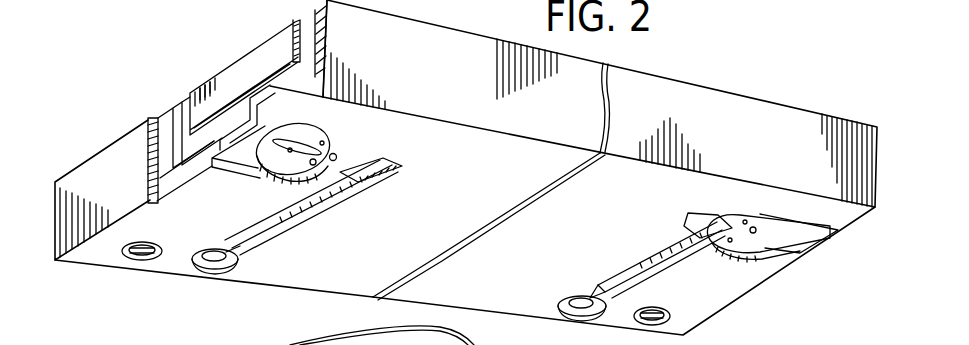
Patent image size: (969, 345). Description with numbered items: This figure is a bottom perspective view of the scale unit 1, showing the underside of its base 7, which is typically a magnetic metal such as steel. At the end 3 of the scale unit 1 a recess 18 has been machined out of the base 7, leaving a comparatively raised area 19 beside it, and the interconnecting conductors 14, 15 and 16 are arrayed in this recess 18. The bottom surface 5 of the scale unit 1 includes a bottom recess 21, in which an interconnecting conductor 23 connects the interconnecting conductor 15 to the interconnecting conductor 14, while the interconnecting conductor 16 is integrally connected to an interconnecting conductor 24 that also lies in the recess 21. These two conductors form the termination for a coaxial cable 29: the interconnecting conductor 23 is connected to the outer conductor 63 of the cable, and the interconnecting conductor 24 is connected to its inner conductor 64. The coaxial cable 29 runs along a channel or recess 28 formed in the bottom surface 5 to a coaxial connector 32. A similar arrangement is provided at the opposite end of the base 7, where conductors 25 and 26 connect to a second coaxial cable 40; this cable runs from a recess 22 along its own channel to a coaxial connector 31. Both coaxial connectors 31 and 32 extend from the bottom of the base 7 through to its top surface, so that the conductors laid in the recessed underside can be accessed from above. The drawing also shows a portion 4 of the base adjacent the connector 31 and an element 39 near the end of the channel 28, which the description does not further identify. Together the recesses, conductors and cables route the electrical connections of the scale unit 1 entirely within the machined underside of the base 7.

The scale unit 1 is at (727, 84).
The end 3 is at (85, 172).
The floor portion 4 is at (727, 307).
The bottom surface 5 is at (308, 278).
The base 7 is at (879, 128).
The interconnecting conductor 14 is at (160, 120).
The interconnecting conductor 15 is at (318, 47).
The interconnecting conductor 16 is at (180, 110).
The recess 18 is at (173, 188).
The raised area 19 is at (268, 48).
The bottom recess 21 is at (227, 167).
The recess 22 is at (757, 257).
The interconnecting conductor 23 is at (290, 134).
The interconnecting conductor 24 is at (262, 142).
The conductor 25 is at (785, 253).
The conductor 26 is at (798, 240).
The channel or recess 28 is at (331, 197).
The coaxial cable 29 is at (660, 257).
The coaxial connector 31 is at (562, 307).
The coaxial connector 32 is at (198, 262).
The track end frame 39 is at (393, 162).
The coaxial cable 40 is at (650, 252).
The outer conductor 63 is at (336, 155).
The inner conductor 64 is at (313, 166).